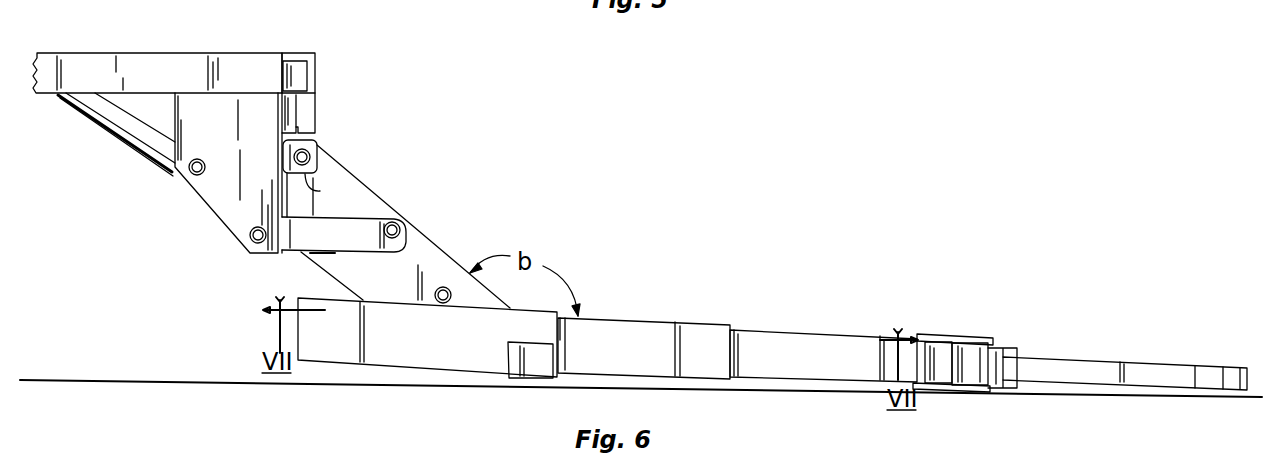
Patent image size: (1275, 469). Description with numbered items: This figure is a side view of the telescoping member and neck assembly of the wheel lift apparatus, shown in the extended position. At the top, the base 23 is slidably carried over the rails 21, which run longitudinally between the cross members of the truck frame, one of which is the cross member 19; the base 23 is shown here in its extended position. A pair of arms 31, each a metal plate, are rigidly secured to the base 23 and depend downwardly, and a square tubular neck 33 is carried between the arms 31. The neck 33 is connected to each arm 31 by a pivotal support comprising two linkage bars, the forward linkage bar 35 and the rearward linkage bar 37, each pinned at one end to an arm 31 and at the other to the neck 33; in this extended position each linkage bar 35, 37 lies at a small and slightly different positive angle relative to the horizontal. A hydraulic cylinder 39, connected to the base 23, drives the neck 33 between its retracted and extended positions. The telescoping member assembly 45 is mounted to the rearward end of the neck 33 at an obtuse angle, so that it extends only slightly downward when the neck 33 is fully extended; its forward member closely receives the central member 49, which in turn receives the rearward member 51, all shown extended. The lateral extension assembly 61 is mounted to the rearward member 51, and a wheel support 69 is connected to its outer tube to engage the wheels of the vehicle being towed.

The cross member 19 is at (316, 76).
The rails 21 is at (300, 60).
The base 23 is at (163, 52).
The arm 31 is at (213, 212).
The neck 33 is at (428, 233).
The forward linkage bar 35 is at (346, 172).
The rearward linkage bar 37 is at (376, 200).
The hydraulic cylinder 39 is at (133, 148).
The telescoping member assembly 45 is at (600, 293).
The central member 49 is at (692, 323).
The rearward member 51 is at (803, 335).
The lateral extension assembly 61 is at (1013, 327).
The wheel support 69 is at (1130, 360).